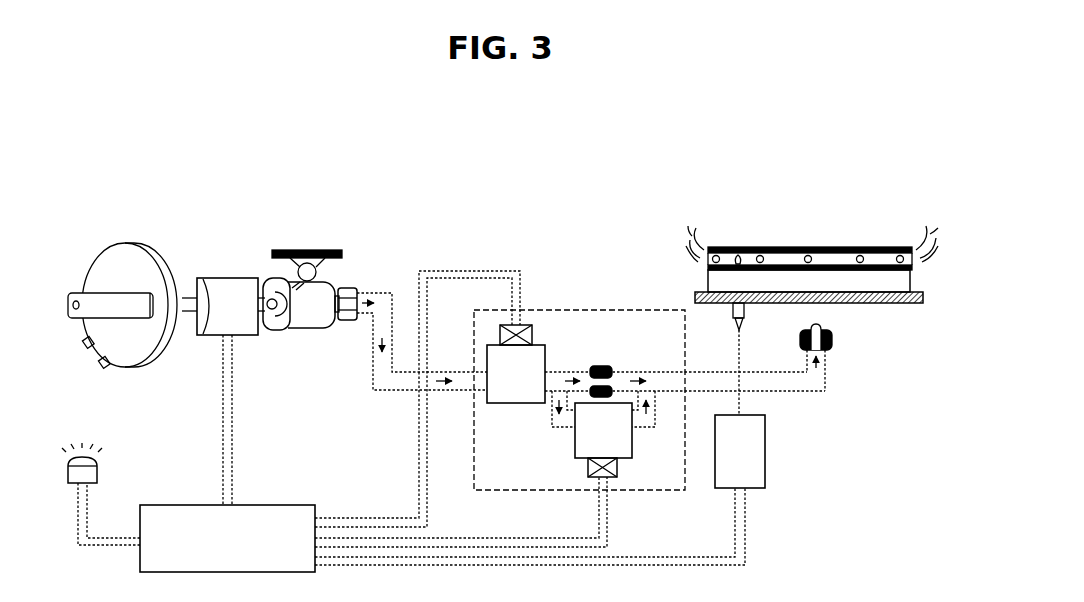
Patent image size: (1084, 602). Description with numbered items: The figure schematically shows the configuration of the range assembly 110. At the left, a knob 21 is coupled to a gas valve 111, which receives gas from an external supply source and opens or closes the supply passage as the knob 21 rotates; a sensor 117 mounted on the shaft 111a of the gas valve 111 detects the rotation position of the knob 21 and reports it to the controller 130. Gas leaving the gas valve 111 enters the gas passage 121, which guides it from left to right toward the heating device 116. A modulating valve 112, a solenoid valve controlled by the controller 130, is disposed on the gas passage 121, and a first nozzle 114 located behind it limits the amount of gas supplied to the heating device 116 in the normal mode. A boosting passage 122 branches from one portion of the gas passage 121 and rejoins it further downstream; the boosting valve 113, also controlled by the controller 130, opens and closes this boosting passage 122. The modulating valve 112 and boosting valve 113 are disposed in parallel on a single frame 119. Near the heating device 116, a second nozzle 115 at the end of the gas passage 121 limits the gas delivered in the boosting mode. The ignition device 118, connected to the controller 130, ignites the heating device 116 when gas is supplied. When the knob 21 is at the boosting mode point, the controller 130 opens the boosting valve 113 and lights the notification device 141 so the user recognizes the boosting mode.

The range assembly 110 is at (467, 167).
The knob 21 is at (134, 243).
The sensor 117 is at (225, 278).
The shaft 111a is at (261, 331).
The gas valve 111 is at (318, 329).
The gas passage 121 is at (394, 392).
The modulating valve 112 is at (546, 350).
The frame 119 is at (613, 310).
The first nozzle 114 is at (601, 366).
The boosting passage 122 is at (551, 428).
The boosting valve 113 is at (632, 440).
The ignition device 118 is at (765, 456).
The second nozzle 115 is at (833, 337).
The heating device 116 is at (823, 230).
The controller 130 is at (289, 505).
The notification device 141 is at (100, 470).